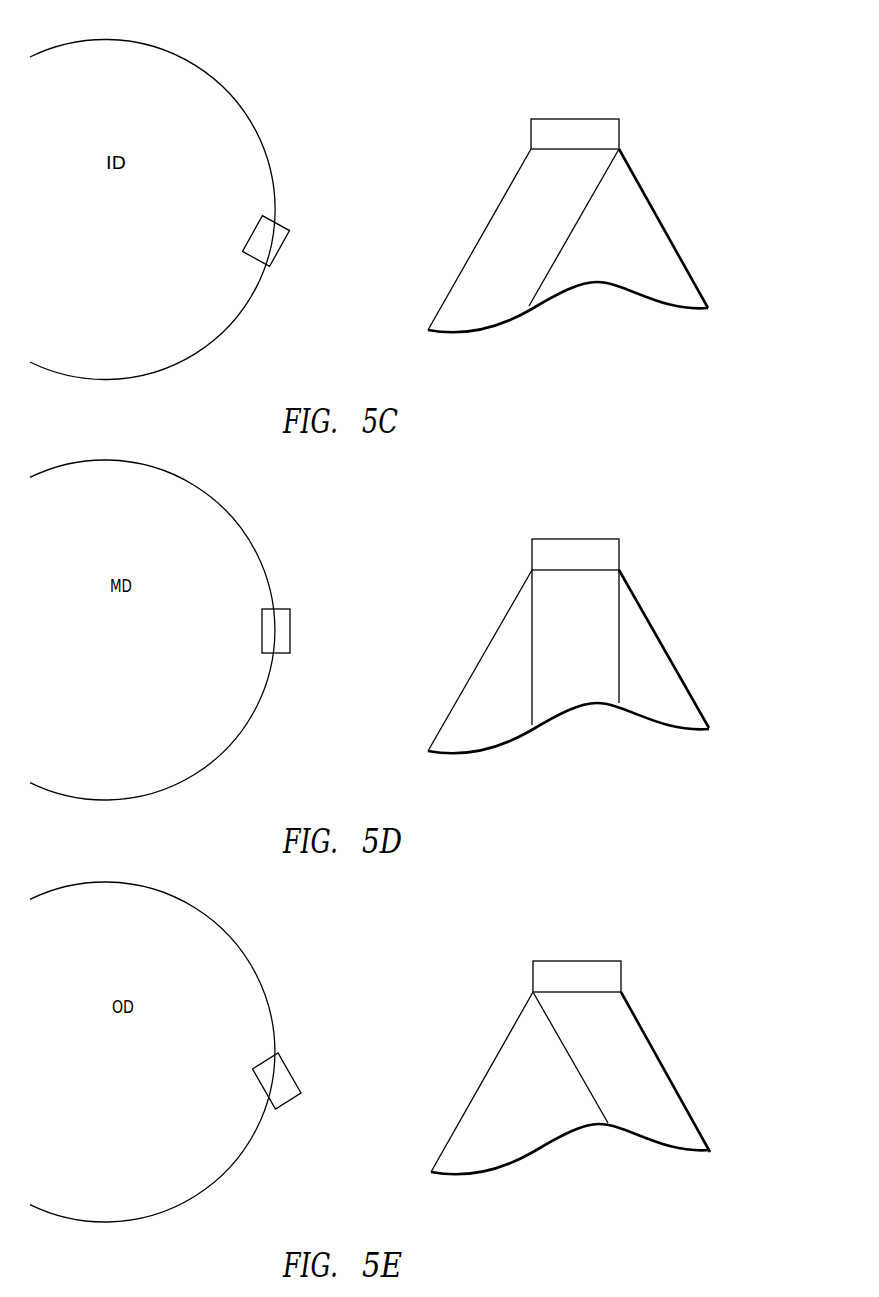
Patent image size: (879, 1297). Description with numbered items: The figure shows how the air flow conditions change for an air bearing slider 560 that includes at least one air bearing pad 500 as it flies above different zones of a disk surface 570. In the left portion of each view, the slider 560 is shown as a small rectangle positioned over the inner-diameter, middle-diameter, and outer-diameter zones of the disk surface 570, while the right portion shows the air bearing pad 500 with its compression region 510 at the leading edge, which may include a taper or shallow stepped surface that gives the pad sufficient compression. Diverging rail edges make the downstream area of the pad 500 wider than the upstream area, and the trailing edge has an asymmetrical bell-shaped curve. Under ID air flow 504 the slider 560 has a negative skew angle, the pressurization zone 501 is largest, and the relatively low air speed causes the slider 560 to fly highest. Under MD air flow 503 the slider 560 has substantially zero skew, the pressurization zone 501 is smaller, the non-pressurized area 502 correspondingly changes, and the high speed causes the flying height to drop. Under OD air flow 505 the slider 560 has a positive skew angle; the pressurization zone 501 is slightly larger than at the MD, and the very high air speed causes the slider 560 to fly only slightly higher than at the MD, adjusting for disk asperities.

In FIG. 5C, the air bearing pad 500 is at (723, 74).
In FIG. 5D, the air bearing pad 500 is at (725, 494).
In FIG. 5E, the air bearing pad 500 is at (725, 918).
In FIG. 5C, the pressurization zone 501 is at (495, 230).
In FIG. 5D, the pressurization zone 501 is at (542, 624).
In FIG. 5E, the pressurization zone 501 is at (653, 1060).
In FIG. 5C, the non-pressurized area 502 is at (668, 253).
In FIG. 5D, the non-pressurized area 502 is at (668, 675).
In FIG. 5E, the non-pressurized area 502 is at (483, 1093).
In FIG. 5D, the MD air flow 503 is at (577, 512).
In FIG. 5C, the ID air flow 504 is at (590, 91).
In FIG. 5E, the OD air flow 505 is at (566, 939).
In FIG. 5C, the compression region 510 is at (619, 135).
In FIG. 5D, the compression region 510 is at (619, 555).
In FIG. 5E, the compression region 510 is at (621, 975).
In FIG. 5C, the air bearing slider 560 is at (282, 238).
In FIG. 5D, the air bearing slider 560 is at (290, 641).
In FIG. 5E, the air bearing slider 560 is at (287, 1077).
In FIG. 5C, the disk surface 570 is at (252, 142).
In FIG. 5D, the disk surface 570 is at (252, 564).
In FIG. 5E, the disk surface 570 is at (253, 984).